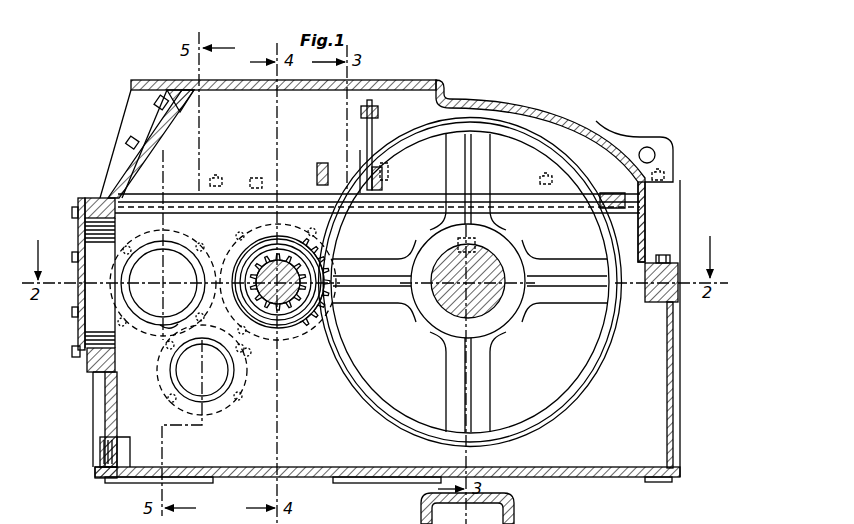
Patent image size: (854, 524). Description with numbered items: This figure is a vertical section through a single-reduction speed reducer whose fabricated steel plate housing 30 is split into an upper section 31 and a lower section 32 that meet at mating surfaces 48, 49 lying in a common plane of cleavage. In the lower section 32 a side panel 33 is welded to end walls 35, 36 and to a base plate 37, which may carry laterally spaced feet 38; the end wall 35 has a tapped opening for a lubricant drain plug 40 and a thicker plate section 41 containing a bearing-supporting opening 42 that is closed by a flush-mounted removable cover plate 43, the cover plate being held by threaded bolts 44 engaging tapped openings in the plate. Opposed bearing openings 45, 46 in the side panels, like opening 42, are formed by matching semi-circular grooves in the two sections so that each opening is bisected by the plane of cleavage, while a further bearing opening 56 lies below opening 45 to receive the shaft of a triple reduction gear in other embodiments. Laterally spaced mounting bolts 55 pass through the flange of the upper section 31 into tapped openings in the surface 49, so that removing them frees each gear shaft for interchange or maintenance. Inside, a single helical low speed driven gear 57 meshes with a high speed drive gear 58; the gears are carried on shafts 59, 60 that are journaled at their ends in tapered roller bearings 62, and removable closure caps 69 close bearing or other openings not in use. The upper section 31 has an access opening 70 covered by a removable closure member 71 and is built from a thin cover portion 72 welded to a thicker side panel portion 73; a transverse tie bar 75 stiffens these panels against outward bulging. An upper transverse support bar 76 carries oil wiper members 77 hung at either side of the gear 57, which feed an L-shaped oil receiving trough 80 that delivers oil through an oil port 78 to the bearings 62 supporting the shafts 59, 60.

The reducer housing 30 is at (88, 380).
The upper section 31 is at (563, 122).
The lower section 32 is at (684, 372).
The side panel 33 is at (132, 404).
The end wall 35 is at (104, 426).
The end wall 36 is at (676, 424).
The base plate 37 is at (114, 479).
The feet 38 is at (186, 483).
The lubricant drain plug 40 is at (100, 456).
The thicker plate section 41 is at (82, 372).
The bearing-supporting opening 42 is at (96, 338).
The removable cover plate 43 is at (78, 228).
The bolts 44 is at (78, 206).
The bearing opening 45 is at (164, 330).
The bearing opening 46 is at (250, 356).
The mating surface 48 is at (96, 284).
The mating surface 49 is at (108, 292).
The mounting bolts 55 is at (218, 176).
The bearing opening 56 is at (186, 392).
The low speed driven gear 57 is at (372, 400).
The high speed drive gear 58 is at (254, 256).
The shaft 59 is at (448, 302).
The shaft 60 is at (312, 300).
The tapered roller bearings 62 is at (258, 316).
The removable closure caps 69 is at (176, 264).
The access opening 70 is at (172, 126).
The removable closure member 71 is at (118, 156).
The cover portion 72 is at (386, 80).
The side panel portion 73 is at (260, 178).
The tie bar 75 is at (320, 168).
The upper transverse support bar 76 is at (372, 108).
The oil wiper members 77 is at (367, 132).
The oil port 78 is at (158, 192).
The oil receiving trough 80 is at (190, 206).